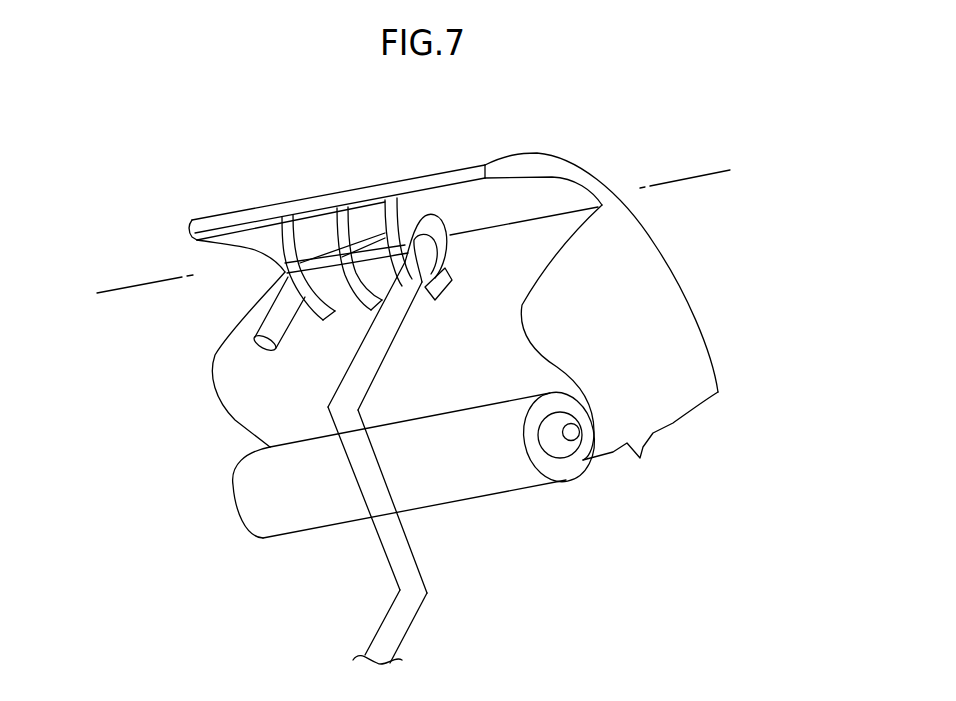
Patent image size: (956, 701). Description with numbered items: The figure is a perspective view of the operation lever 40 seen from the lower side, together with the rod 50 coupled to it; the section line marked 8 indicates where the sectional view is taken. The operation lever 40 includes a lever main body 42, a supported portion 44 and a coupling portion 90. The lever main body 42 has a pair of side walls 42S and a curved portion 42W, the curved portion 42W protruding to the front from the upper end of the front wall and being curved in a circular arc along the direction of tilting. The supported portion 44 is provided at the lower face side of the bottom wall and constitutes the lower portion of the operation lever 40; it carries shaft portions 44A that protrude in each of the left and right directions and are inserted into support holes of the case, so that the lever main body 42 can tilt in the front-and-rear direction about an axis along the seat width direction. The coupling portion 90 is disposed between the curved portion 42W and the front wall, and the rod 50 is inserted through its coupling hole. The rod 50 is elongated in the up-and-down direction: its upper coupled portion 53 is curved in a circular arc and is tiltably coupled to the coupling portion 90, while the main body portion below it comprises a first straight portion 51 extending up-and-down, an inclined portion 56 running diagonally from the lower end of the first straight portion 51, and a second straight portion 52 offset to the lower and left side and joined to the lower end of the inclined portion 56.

The operation lever 40 is at (728, 242).
The lever main body 42 is at (719, 397).
The side walls 42S is at (692, 337).
The curved portion 42W is at (247, 215).
The supported portion 44 is at (510, 493).
The shaft portions 44A is at (587, 460).
The rod 50 is at (368, 639).
The first straight portion 51 is at (383, 346).
The second straight portion 52 is at (408, 627).
The coupled portion 53 is at (275, 315).
The inclined portion 56 is at (406, 550).
The coupling portion 90 is at (455, 263).
The section line 8- 8 is at (118, 280).